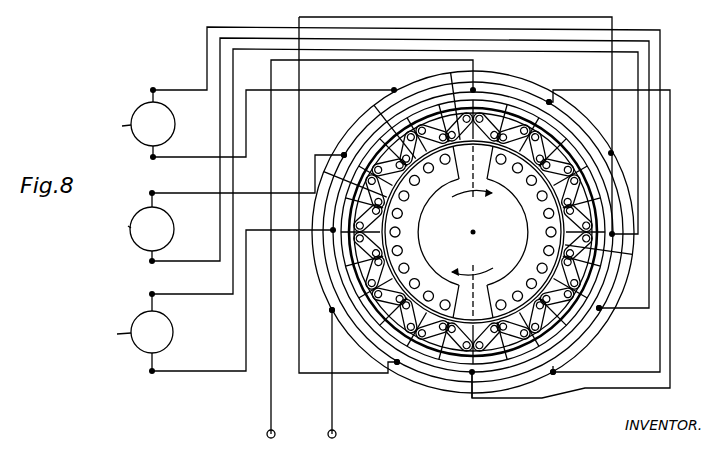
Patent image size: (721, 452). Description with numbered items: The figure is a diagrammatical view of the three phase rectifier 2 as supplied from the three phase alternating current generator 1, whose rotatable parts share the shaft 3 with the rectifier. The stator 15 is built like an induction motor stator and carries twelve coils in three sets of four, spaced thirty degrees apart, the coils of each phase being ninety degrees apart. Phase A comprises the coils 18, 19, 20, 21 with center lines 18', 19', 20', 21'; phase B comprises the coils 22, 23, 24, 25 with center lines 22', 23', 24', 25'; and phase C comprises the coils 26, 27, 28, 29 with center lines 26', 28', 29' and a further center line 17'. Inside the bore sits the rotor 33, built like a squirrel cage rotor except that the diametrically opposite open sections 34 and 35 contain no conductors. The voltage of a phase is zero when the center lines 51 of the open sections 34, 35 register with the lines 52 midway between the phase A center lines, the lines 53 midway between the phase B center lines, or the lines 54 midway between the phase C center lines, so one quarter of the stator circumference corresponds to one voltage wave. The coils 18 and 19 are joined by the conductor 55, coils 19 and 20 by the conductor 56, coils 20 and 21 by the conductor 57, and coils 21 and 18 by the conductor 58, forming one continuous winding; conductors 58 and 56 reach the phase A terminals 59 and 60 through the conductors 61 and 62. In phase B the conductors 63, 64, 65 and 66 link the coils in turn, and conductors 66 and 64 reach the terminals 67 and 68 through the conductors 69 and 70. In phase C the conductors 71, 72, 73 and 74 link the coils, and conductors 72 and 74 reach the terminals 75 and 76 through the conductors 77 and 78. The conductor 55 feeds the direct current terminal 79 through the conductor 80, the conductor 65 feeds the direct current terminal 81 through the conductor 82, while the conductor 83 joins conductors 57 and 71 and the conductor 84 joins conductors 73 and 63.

The three phase alternating electric current generator 1 is at (140, 313).
The three phase rectifier 2 is at (624, 229).
The shaft 3 is at (479, 233).
The stator 15 is at (562, 88).
The center line 17' is at (592, 210).
The coil 18 is at (364, 156).
The center line 18' is at (385, 137).
The coil 19 is at (571, 168).
The center line 19' is at (559, 132).
The coil 20 is at (587, 309).
The center line 20' is at (566, 329).
The coil 21 is at (378, 297).
The center line 21' is at (385, 330).
The coil 22 is at (528, 112).
The center line 22' is at (504, 104).
The coil 23 is at (601, 246).
The center line 23' is at (598, 272).
The coil 24 is at (419, 352).
The center line 24' is at (446, 363).
The coil 25 is at (349, 218).
The center line 25' is at (353, 191).
The coil 26 is at (426, 109).
The center line 26' is at (449, 115).
The coil 27 is at (573, 190).
The coil 28 is at (519, 338).
The center line 28' is at (500, 349).
The coil 29 is at (350, 272).
The center line 29' is at (356, 259).
The rotor 33 is at (473, 232).
The open section 34 is at (473, 162).
The open section 35 is at (473, 301).
The center line 51 is at (471, 232).
The line 52 is at (332, 233).
The line 53 is at (394, 94).
The line 54 is at (345, 158).
The conductor 55 is at (461, 100).
The conductor 56 is at (607, 252).
The conductor 57 is at (474, 386).
The conductor 58 is at (350, 182).
The terminal 59 is at (157, 369).
The terminal 60 is at (156, 296).
The conductor 61 is at (246, 356).
The conductor 62 is at (233, 296).
The conductor 63 is at (612, 120).
The conductor 64 is at (552, 375).
The conductor 65 is at (329, 310).
The conductor 66 is at (384, 112).
The terminal 67 is at (158, 155).
The terminal 68 is at (156, 92).
The conductor 69 is at (208, 157).
The conductor 70 is at (205, 95).
The conductor 71 is at (552, 102).
The conductor 72 is at (602, 310).
The conductor 73 is at (392, 362).
The conductor 74 is at (342, 155).
The terminal 75 is at (157, 259).
The terminal 76 is at (157, 195).
The conductor 77 is at (219, 255).
The conductor 78 is at (208, 193).
The direct current terminal 79 is at (267, 433).
The conductor 80 is at (270, 399).
The direct current terminal 81 is at (337, 433).
The conductor 82 is at (333, 397).
The conductor 83 is at (512, 398).
The conductor 84 is at (305, 351).